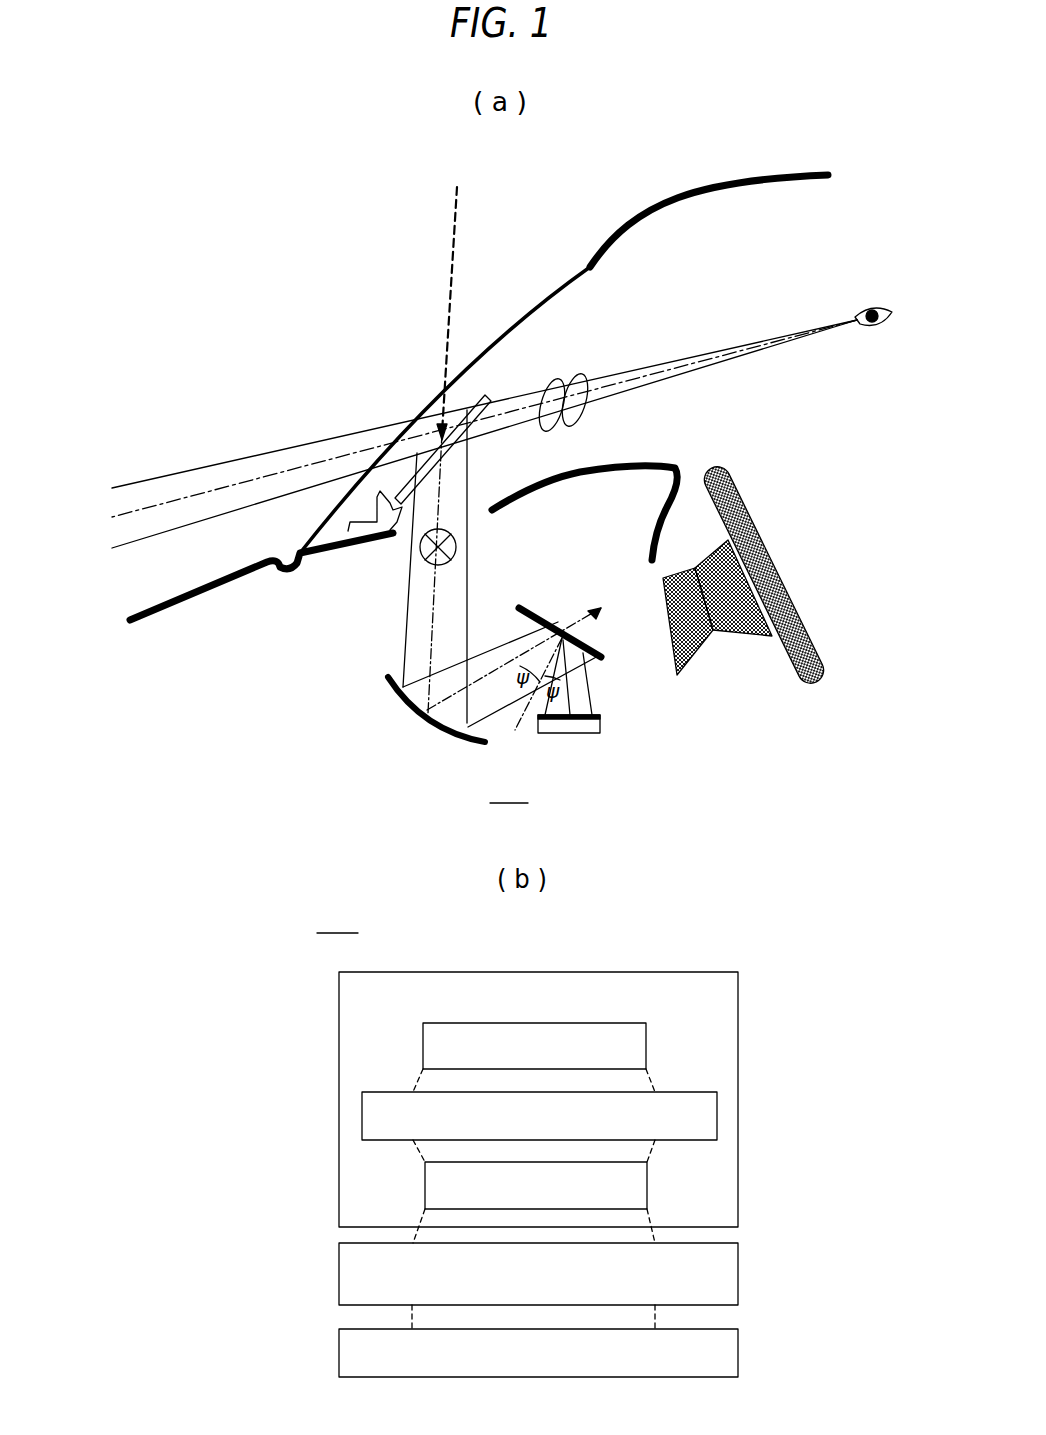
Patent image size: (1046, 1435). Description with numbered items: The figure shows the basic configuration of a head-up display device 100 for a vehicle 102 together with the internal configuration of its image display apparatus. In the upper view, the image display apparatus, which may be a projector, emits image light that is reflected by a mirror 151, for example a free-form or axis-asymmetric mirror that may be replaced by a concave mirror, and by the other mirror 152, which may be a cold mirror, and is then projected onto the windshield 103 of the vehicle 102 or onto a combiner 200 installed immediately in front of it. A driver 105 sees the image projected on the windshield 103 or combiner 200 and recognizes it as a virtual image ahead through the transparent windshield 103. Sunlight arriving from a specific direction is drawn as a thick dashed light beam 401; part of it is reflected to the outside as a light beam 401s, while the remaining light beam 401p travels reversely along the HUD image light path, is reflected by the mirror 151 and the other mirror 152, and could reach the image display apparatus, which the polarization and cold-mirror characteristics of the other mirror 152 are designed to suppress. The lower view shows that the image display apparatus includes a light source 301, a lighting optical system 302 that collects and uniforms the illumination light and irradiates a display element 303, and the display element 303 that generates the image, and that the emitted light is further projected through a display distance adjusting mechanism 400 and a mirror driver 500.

The HUD device 100 is at (422, 856).
The vehicle 102 is at (717, 185).
The windshield 103 is at (557, 297).
The driver 105 is at (888, 297).
The mirror 151 is at (415, 725).
The other mirror 152 is at (537, 603).
The combiner 200 is at (405, 470).
The light source 301 is at (646, 1048).
The lighting optical system 302 is at (717, 1117).
The display element 303 is at (647, 1187).
The display distance adjusting mechanism 400 is at (738, 1268).
The light beam 401 is at (453, 235).
The light beam 401s is at (335, 462).
The light beam 401p is at (607, 618).
The mirror driver 500 is at (738, 1354).